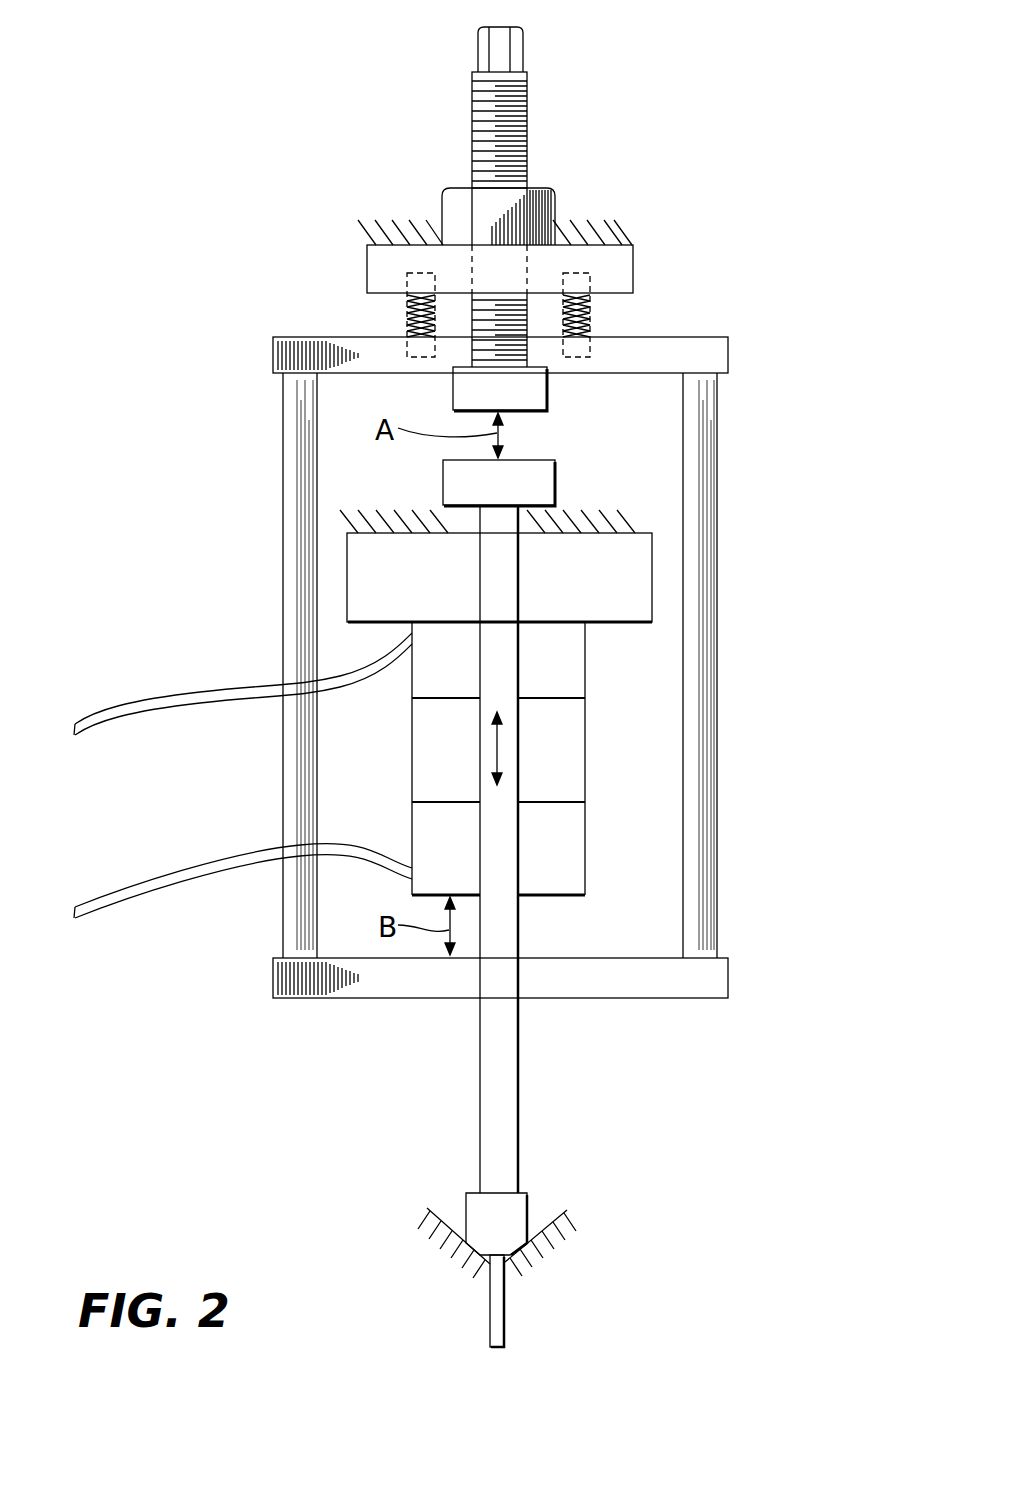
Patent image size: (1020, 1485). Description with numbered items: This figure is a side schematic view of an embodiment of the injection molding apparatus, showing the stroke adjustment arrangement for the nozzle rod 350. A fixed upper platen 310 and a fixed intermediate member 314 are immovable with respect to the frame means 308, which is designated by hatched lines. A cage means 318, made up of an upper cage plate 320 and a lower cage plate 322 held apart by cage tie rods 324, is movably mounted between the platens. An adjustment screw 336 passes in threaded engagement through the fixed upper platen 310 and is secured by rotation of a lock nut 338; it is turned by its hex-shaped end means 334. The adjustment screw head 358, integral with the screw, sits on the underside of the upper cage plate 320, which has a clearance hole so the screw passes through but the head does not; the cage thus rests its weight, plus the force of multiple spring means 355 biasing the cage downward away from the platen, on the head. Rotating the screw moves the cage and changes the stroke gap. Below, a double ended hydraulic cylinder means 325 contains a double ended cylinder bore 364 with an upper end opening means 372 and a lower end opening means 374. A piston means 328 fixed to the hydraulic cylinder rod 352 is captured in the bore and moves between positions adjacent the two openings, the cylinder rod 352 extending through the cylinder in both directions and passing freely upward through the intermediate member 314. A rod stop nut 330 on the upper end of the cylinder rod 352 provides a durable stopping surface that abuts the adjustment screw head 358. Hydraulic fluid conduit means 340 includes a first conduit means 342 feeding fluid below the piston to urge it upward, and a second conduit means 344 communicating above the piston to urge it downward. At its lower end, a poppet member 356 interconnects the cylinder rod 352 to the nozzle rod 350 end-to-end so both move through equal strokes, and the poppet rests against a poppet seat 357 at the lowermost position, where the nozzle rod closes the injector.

The frame means 308 is at (608, 515).
The fixed upper platen 310 is at (368, 275).
The fixed intermediate member 314 is at (432, 596).
The cage means 318 is at (283, 348).
The upper cage plate 320 is at (703, 350).
The lower cage plate 322 is at (670, 988).
The cage tie rods 324 is at (290, 460).
The hydraulic cylinder means 325 is at (585, 745).
The piston means 328 is at (568, 763).
The rod stop nut 330 is at (557, 478).
The adjustment screw hex-shaped end means 334 is at (524, 34).
The adjustment screw 336 is at (527, 105).
The lock nut 338 is at (547, 198).
The hydraulic fluid conduit means 340 is at (120, 892).
The first conduit means 342 is at (250, 848).
The second conduit means 344 is at (222, 698).
The nozzle rod 350 is at (505, 1310).
The hydraulic cylinder rod 352 is at (512, 1088).
The multiple spring means 355 is at (407, 315).
The poppet member 356 is at (520, 1215).
The poppet seat 357 is at (440, 1215).
The adjustment screw head 358 is at (539, 393).
The double ended cylinder bore 364 is at (552, 878).
The upper end opening means 372 is at (518, 627).
The lower end opening means 374 is at (473, 883).